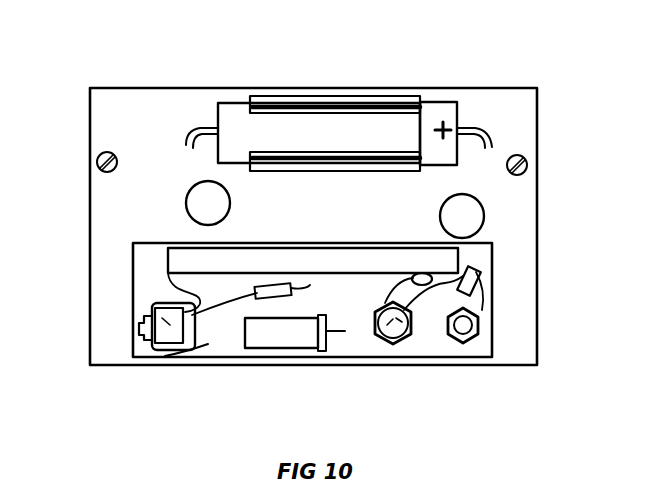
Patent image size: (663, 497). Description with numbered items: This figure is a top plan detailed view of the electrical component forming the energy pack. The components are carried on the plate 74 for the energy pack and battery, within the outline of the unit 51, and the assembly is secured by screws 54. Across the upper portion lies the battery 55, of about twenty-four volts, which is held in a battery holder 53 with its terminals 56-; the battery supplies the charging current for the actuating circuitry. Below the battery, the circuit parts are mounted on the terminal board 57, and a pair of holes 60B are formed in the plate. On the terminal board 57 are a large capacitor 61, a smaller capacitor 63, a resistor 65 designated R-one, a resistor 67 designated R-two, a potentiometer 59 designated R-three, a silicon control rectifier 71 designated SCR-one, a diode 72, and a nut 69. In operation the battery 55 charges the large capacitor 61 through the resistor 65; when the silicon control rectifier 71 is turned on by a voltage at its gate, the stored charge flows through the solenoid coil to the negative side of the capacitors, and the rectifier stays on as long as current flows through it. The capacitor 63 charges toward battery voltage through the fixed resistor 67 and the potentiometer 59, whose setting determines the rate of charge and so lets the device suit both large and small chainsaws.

The housing 51 is at (512, 130).
The battery 53 is at (298, 97).
The screws 54 is at (98, 156).
The battery 55 is at (458, 150).
The negative battery terminal 56- is at (185, 148).
The terminal board 57 is at (170, 356).
The potentiometer 59 is at (140, 308).
The holes 60B is at (187, 203).
The capacitor 61 is at (165, 253).
The capacitor 63 is at (292, 350).
The resistor 65 is at (258, 296).
The resistor 67 is at (480, 287).
The nut 69 is at (474, 345).
The silicon control rectifier 71 is at (373, 345).
The diode 72 is at (412, 279).
The plate 74 is at (120, 272).